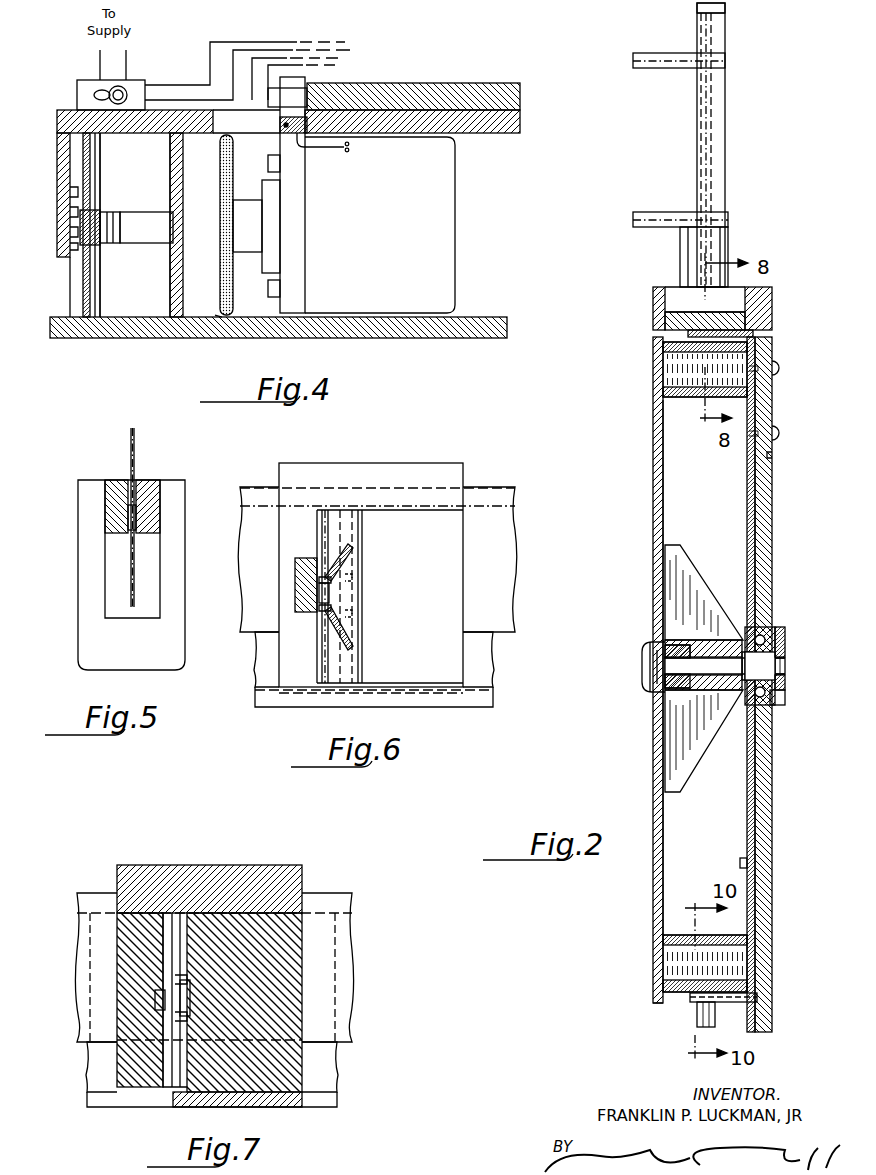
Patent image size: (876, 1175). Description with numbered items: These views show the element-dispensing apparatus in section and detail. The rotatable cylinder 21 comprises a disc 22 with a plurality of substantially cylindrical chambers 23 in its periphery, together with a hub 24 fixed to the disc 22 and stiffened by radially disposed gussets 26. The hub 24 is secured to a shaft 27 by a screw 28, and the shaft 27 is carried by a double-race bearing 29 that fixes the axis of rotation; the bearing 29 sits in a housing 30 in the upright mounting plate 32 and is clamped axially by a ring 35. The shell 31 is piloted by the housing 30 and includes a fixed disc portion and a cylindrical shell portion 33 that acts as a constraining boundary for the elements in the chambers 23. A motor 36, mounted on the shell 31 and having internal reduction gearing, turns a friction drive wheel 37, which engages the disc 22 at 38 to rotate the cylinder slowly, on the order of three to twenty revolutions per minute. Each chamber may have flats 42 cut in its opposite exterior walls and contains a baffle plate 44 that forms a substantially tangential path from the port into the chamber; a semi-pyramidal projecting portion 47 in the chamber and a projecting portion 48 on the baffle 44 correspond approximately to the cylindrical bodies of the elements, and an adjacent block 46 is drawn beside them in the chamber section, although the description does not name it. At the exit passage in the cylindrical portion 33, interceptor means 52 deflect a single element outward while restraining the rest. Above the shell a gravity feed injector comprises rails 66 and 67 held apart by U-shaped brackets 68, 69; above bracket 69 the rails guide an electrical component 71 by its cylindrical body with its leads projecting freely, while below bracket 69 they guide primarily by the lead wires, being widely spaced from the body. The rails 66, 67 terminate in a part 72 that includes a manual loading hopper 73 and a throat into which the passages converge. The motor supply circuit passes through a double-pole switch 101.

In FIG. 2, the rotatable cylinder 21 is at (659, 1014).
In FIG. 4, the disc 22 is at (279, 328).
In FIG. 6, the disc 22 is at (477, 700).
In FIG. 7, the disc 22 is at (330, 1103).
In FIG. 2, the disc 22 is at (660, 460).
In FIG. 4, the cylindrical chambers 23 is at (150, 300).
In FIG. 2, the cylindrical chambers 23 is at (686, 408).
In FIG. 2, the hub 24 is at (715, 640).
In FIG. 2, the gussets 26 is at (687, 585).
In FIG. 2, the shaft 27 is at (725, 700).
In FIG. 2, the screw 28 is at (646, 655).
In FIG. 2, the double-race bearing 29 is at (770, 625).
In FIG. 2, the housing 30 is at (762, 630).
In FIG. 4, the shell 31 is at (493, 125).
In FIG. 6, the shell 31 is at (497, 512).
In FIG. 7, the shell 31 is at (352, 927).
In FIG. 2, the shell 31 is at (752, 828).
In FIG. 4, the upright mounting plate 32 is at (452, 95).
In FIG. 2, the upright mounting plate 32 is at (765, 553).
In FIG. 4, the cylindrical shell portion 33 is at (60, 248).
In FIG. 6, the cylindrical shell portion 33 is at (499, 617).
In FIG. 7, the cylindrical shell portion 33 is at (345, 1033).
In FIG. 2, the cylindrical shell portion 33 is at (752, 338).
In FIG. 2, the ring 35 is at (785, 700).
In FIG. 4, the motor 36 is at (420, 220).
In FIG. 4, the friction drive wheel 37 is at (238, 283).
In FIG. 4, the engagement point 38 is at (213, 307).
In FIG. 2, the flats 42 is at (667, 366).
In FIG. 4, the baffle plate 44 is at (106, 225).
In FIG. 4, the block 46 is at (150, 232).
In FIG. 4, the semi-pyramidal projecting portion 47 is at (118, 222).
In FIG. 4, the projecting portion 48 is at (100, 218).
In FIG. 2, the interceptor means 52 is at (694, 1020).
In FIG. 5, the rail 66 is at (116, 480).
In FIG. 6, the rail 66 is at (310, 566).
In FIG. 7, the rail 66 is at (137, 960).
In FIG. 2, the rail 66 is at (725, 8).
In FIG. 5, the rail 67 is at (155, 483).
In FIG. 6, the rail 67 is at (346, 566).
In FIG. 2, the rail 67 is at (720, 109).
In FIG. 5, the U-shaped bracket 68 is at (92, 568).
In FIG. 2, the U-shaped bracket 68 is at (650, 62).
In FIG. 2, the U-shaped bracket 69 is at (663, 215).
In FIG. 5, the electrical component 71 is at (139, 465).
In FIG. 6, the electrical component 71 is at (320, 657).
In FIG. 6, the part 72 is at (448, 497).
In FIG. 7, the part 72 is at (285, 983).
In FIG. 2, the part 72 is at (665, 323).
In FIG. 2, the manual loading hopper 73 is at (735, 310).
In FIG. 4, the double-pole switch 101 is at (85, 90).